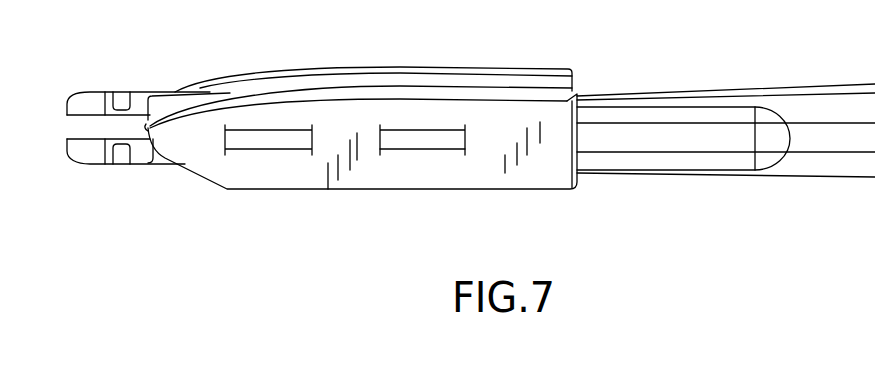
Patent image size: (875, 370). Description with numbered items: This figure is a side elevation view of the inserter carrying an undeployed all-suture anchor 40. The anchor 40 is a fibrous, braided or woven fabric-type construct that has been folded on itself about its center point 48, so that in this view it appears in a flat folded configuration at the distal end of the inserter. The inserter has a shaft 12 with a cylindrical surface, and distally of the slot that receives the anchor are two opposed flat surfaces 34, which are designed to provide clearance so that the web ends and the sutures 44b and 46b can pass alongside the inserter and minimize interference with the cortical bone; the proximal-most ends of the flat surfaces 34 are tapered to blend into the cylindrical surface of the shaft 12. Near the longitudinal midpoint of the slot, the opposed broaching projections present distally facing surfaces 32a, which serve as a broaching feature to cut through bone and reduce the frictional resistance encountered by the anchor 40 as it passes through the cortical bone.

The shaft 12 is at (848, 180).
The distally facing surfaces 32a is at (110, 104).
The flat surfaces 34 is at (713, 163).
The all-suture anchor 40 is at (549, 178).
The suture 44b is at (437, 151).
The suture 46b is at (420, 131).
The center point 48 is at (150, 128).